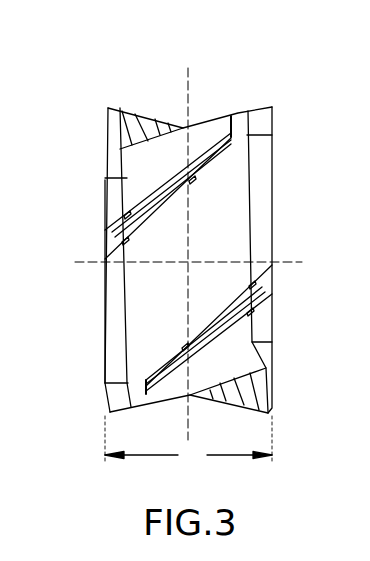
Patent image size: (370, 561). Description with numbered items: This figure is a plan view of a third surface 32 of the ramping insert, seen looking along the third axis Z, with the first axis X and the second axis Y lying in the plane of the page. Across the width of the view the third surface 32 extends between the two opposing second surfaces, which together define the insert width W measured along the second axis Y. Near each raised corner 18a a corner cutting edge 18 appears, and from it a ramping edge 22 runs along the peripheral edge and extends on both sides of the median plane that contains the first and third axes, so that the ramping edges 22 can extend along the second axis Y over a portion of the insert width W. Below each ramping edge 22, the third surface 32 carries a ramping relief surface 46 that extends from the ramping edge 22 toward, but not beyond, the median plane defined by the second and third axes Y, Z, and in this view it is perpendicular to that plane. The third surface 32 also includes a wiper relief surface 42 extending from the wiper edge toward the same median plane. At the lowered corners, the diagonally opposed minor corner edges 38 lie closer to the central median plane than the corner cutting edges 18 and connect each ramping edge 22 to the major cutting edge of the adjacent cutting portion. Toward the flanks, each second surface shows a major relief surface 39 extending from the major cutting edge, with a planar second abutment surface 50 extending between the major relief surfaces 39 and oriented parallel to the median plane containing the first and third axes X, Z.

The corner cutting edge 18 is at (272, 110).
The raised corner 18a is at (96, 94).
The ramping edge 22 is at (181, 124).
The third surface 32 is at (165, 370).
The minor corner edge 38 is at (107, 153).
The major relief surface 39 is at (107, 145).
The wiper relief surface 42 is at (268, 134).
The ramping relief surface 46 is at (142, 167).
The second abutment surface 50 is at (273, 185).
The insert width W is at (188, 442).
The first axis X is at (190, 93).
The second axis Y is at (287, 262).
The third axis Z is at (188, 264).